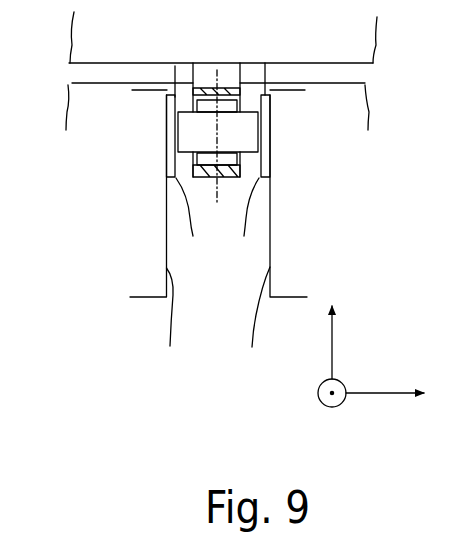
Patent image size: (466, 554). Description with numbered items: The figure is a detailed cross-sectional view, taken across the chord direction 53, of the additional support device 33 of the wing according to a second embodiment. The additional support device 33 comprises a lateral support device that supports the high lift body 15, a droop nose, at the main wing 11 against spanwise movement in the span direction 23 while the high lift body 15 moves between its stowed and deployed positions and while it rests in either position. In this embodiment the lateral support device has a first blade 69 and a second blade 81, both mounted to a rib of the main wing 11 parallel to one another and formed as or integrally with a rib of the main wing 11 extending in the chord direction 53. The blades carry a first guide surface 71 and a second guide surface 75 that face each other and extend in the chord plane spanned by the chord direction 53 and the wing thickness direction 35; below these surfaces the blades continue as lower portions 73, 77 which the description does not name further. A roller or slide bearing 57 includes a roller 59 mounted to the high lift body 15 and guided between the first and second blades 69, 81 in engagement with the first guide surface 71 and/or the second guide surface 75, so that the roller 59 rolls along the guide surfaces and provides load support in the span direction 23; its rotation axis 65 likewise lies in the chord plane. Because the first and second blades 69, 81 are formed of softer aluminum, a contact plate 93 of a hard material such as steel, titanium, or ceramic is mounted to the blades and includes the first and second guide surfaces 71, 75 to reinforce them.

The main wing 11 is at (145, 258).
The high lift body 15 is at (232, 47).
The span direction 23 is at (388, 395).
The additional support device 33 is at (108, 220).
The wing thickness direction 35 is at (333, 338).
The chord direction 53 is at (328, 409).
The roller or slide bearing 57 is at (211, 342).
The roller 59 is at (248, 132).
The rotation axis 65 is at (217, 128).
The first blade 69 is at (142, 190).
The first guide surface 71 is at (190, 223).
The first leg 73 is at (168, 325).
The second guide surface 75 is at (243, 223).
The second leg 77 is at (253, 325).
The second blade 81 is at (288, 190).
The contact plate 93 is at (175, 67).